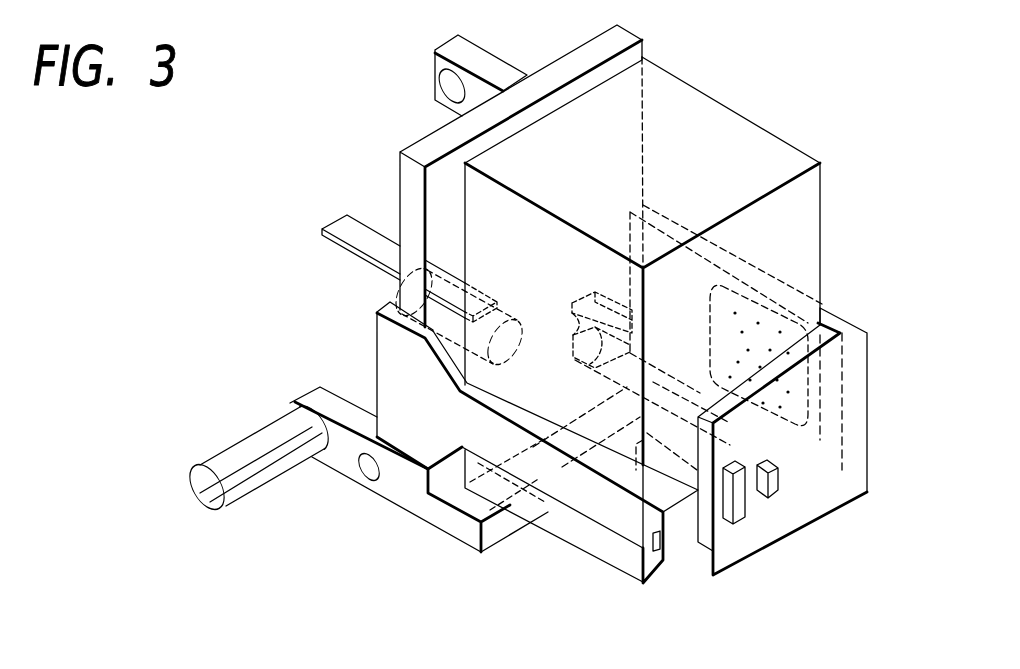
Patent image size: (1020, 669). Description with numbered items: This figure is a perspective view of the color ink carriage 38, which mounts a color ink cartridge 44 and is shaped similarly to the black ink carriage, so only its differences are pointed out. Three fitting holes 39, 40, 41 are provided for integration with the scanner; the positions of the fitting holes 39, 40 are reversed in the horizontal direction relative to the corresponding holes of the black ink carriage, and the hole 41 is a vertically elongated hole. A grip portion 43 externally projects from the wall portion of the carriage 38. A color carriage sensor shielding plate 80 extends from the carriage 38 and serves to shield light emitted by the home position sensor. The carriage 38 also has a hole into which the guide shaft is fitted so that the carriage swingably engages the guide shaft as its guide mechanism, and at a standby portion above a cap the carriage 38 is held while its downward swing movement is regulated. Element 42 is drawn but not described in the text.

The color ink carriage 38 is at (623, 37).
The fitting hole 39 is at (570, 313).
The fitting hole 40 is at (366, 472).
The fitting hole 41 is at (448, 82).
The handle 42 is at (292, 407).
The grip portion 43 is at (410, 296).
The color ink cartridge 44 is at (735, 125).
The color carriage sensor shielding plate 80 is at (342, 222).